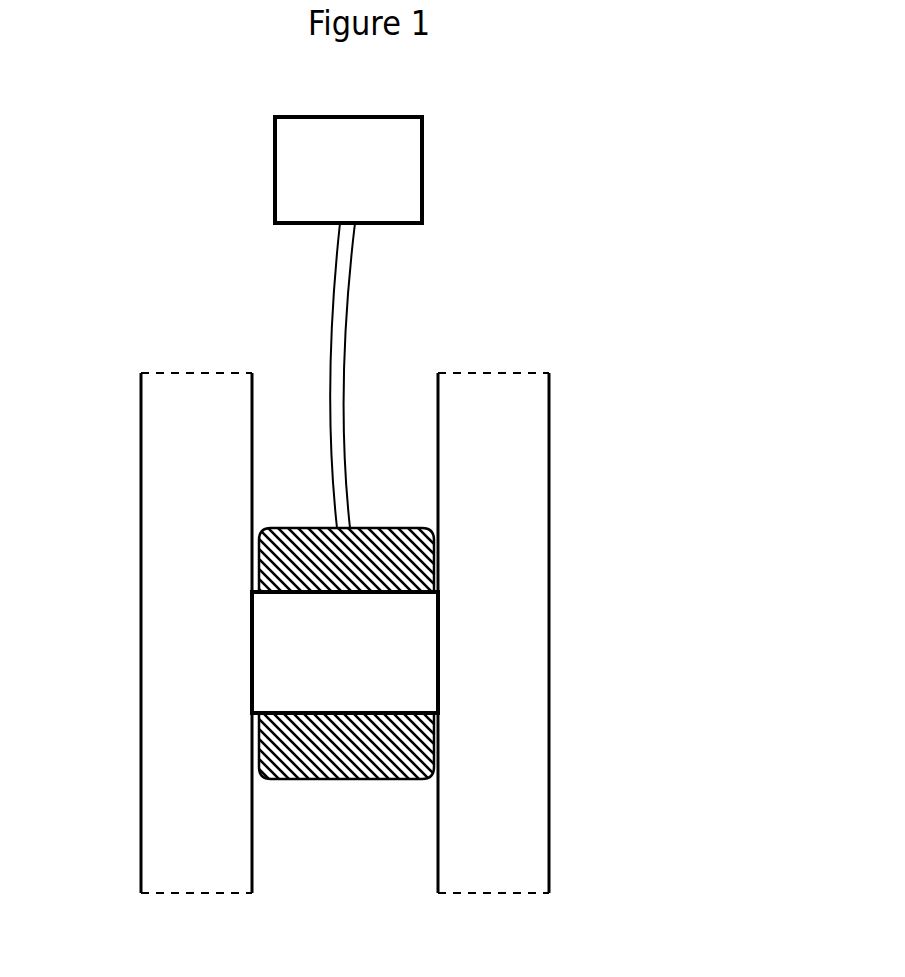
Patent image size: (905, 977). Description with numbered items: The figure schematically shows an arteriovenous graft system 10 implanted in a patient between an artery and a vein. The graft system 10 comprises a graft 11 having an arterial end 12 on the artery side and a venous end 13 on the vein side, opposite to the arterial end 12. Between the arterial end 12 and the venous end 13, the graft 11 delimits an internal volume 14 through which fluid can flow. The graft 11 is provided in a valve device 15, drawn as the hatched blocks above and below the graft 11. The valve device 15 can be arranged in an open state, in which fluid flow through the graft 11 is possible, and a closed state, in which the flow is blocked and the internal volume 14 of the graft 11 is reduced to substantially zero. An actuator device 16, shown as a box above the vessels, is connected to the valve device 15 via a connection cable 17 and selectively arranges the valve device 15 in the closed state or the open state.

The arteriovenous graft system 10 is at (332, 600).
The graft 11 is at (345, 752).
The arterial end 12 is at (250, 652).
The venous end 13 is at (439, 653).
The internal volume 14 is at (360, 671).
The valve device 15 is at (333, 760).
The actuator device 16 is at (394, 169).
The connection cable 17 is at (340, 303).